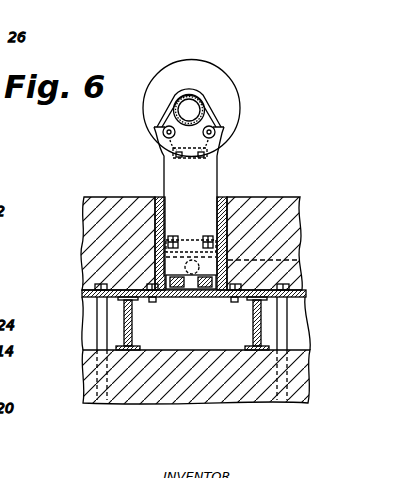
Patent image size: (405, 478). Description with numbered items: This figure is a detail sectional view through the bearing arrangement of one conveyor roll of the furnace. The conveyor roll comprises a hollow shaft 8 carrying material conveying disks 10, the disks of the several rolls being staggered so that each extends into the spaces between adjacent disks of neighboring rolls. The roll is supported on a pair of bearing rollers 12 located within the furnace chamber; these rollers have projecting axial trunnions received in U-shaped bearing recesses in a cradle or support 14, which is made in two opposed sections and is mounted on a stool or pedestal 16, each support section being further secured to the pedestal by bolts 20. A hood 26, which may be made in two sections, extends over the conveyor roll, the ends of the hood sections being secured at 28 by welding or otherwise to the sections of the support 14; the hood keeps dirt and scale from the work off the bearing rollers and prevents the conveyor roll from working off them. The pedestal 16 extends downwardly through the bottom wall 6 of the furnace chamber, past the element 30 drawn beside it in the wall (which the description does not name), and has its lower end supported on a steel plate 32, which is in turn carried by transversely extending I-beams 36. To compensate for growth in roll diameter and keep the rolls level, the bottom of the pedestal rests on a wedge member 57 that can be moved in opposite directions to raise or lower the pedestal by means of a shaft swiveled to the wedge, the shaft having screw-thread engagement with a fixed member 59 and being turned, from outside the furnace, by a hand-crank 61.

The bottom wall 6 is at (301, 199).
The hollow shaft 8 is at (193, 100).
The material conveying disks 10 is at (224, 83).
The bearing rollers 12 is at (214, 114).
The cradle or support 14 is at (171, 153).
The stool or pedestal 16 is at (212, 184).
The bolts 20 is at (209, 152).
The hood 26 is at (208, 105).
The securing points of hood sections 28 is at (226, 131).
The bracket 30 is at (214, 252).
The steel plates 32 is at (306, 293).
The I-beams 36 is at (133, 327).
The wedge member 57 is at (186, 298).
The fixed member 59 is at (318, 259).
The hand-crank 61 is at (191, 262).